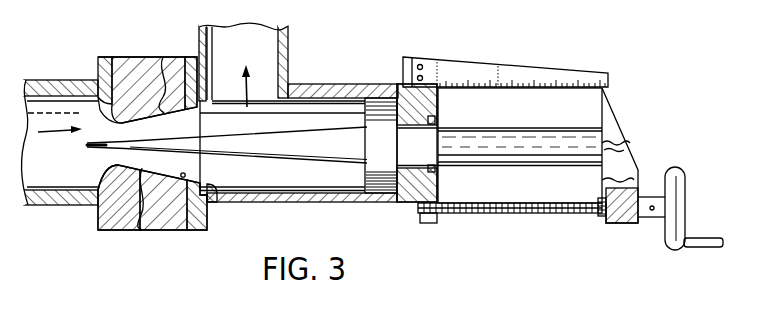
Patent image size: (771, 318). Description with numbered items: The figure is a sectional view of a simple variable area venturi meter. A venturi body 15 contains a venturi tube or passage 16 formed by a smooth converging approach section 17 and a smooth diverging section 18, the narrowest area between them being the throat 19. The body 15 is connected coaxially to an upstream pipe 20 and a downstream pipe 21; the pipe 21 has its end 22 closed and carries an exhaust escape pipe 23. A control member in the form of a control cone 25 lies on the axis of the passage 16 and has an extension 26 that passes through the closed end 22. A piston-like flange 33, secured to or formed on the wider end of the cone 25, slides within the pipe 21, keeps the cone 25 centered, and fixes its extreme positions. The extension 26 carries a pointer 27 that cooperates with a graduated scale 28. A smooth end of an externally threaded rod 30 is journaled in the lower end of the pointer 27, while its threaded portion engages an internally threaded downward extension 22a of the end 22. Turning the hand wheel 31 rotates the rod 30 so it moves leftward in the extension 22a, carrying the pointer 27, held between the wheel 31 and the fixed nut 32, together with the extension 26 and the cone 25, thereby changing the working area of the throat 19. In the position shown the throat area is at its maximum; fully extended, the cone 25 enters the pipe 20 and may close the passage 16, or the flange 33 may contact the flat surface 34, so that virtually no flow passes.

The venturi body 15 is at (128, 57).
The venturi tube or passage 16 is at (162, 57).
The converging approach tube or section 17 is at (97, 158).
The diverging tube or section 18 is at (170, 222).
The throat 19 is at (143, 222).
The pipe 20 is at (42, 205).
The pipe 21 is at (296, 84).
The closed end 22 is at (406, 192).
The internally threaded downward extension 22a is at (425, 223).
The exhaust escape pipe 23 is at (288, 45).
The control cone 25 is at (277, 152).
The extension 26 is at (490, 160).
The pointer 27 is at (614, 118).
The scale 28 is at (496, 72).
The externally threaded rod 30 is at (478, 213).
The hand wheel 31 is at (686, 186).
The fixed nut 32 is at (600, 215).
The piston-like flange 33 is at (382, 98).
The flat surface 34 is at (214, 196).